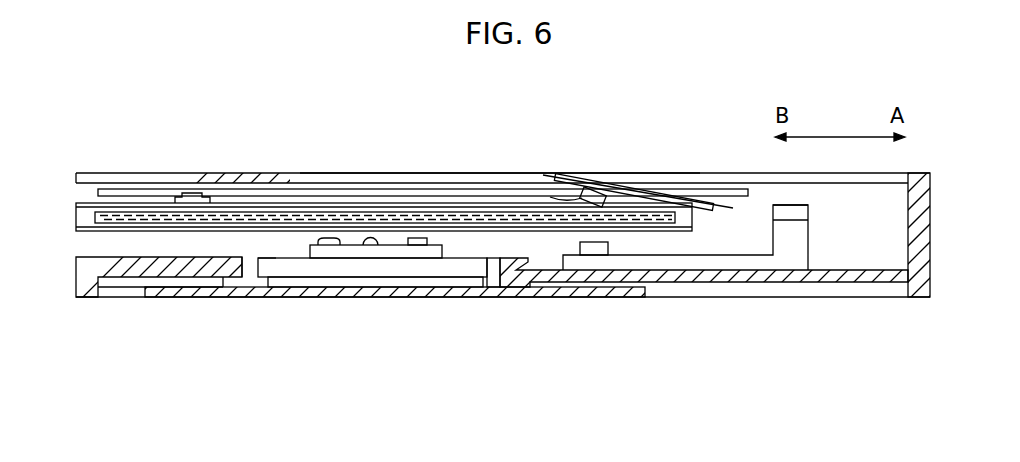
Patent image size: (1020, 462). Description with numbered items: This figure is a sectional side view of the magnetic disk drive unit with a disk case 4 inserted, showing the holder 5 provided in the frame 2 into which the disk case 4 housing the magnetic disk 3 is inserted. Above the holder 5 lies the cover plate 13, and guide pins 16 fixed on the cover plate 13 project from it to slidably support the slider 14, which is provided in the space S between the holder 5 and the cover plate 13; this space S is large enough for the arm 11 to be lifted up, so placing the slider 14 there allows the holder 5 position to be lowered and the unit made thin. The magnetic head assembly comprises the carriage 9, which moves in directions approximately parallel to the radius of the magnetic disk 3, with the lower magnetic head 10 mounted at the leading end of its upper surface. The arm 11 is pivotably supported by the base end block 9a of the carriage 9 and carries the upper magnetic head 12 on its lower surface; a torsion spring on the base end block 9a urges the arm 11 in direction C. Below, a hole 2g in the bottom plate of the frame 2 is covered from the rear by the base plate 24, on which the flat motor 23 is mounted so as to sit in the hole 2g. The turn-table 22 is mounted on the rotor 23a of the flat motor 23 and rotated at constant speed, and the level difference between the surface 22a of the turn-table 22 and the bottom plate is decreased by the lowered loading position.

The space S is at (90, 193).
The guide pins 16 is at (186, 192).
The slider 14 is at (230, 172).
The magnetic disk 3 is at (300, 222).
The cover plate 13 is at (395, 173).
The upper magnetic head 12 is at (550, 197).
The direction C is at (583, 168).
The arm 11 is at (643, 188).
The base end block 9a is at (800, 232).
The carriage 9 is at (676, 262).
The lower magnetic head 10 is at (612, 258).
The disk case 4 is at (95, 222).
The holder 5 is at (123, 232).
The frame 2 is at (137, 273).
The hole 2g is at (242, 250).
The rotor 23a is at (276, 248).
The surface of the turn-table 22a is at (318, 245).
The base plate 24 is at (365, 290).
The flat motor 23 is at (425, 268).
The turn-table 22 is at (473, 262).